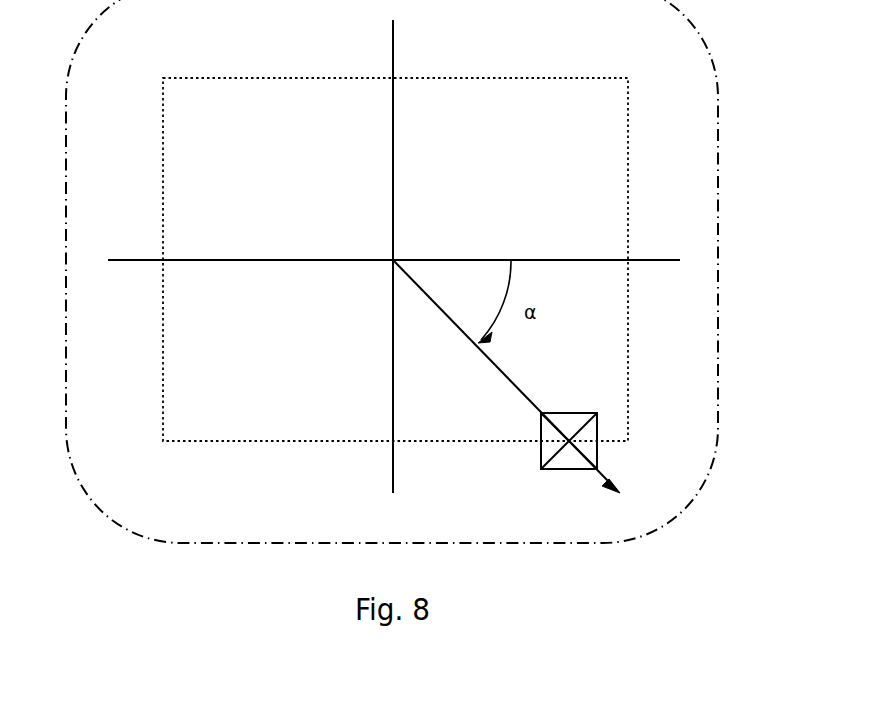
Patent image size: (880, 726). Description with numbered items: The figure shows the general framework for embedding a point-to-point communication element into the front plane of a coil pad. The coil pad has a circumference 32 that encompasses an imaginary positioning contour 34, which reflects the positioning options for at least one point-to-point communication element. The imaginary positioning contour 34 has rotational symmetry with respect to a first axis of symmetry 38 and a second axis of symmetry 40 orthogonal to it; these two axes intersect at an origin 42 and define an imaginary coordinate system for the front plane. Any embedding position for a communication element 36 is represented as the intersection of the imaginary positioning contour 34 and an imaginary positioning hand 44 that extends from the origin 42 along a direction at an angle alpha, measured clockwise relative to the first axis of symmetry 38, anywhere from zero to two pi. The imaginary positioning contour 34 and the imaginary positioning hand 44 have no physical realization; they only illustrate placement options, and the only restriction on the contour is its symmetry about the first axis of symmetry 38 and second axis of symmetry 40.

The circumference 32 is at (719, 152).
The imaginary positioning contour 34 is at (629, 322).
The point-to-point communication element position 36 is at (573, 413).
The first axis of symmetry 38 is at (663, 260).
The second axis of symmetry 40 is at (393, 40).
The origin 42 is at (395, 258).
The imaginary positioning hand 44 is at (487, 358).